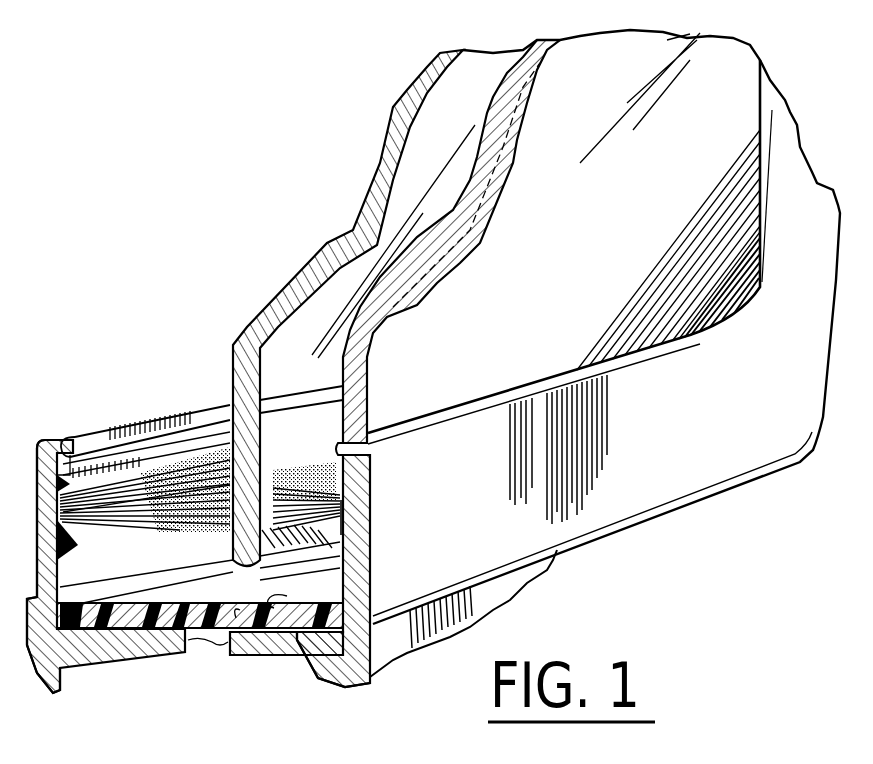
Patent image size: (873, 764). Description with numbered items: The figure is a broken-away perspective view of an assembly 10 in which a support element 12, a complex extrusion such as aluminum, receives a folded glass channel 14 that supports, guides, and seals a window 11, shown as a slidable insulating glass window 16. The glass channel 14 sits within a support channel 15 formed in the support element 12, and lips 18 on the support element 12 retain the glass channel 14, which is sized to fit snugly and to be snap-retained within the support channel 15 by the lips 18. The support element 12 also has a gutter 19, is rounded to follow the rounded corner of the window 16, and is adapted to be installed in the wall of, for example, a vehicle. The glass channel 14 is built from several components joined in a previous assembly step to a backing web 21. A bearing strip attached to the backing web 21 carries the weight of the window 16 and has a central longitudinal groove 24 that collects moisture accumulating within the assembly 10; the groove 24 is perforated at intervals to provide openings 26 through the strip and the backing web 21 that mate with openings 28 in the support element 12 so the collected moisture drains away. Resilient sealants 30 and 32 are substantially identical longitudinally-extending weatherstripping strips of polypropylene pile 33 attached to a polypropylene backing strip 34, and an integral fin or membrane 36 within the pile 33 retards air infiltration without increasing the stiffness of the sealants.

The assembly 10 is at (126, 360).
The window 11 is at (563, 242).
The support element 12 is at (215, 596).
The glass channel 14 is at (196, 564).
The support channel 15 is at (140, 655).
The slidable insulating glass window 16 is at (317, 260).
The lips 18 is at (84, 440).
The gutter 19 is at (300, 657).
The backing web 21 is at (40, 582).
The central longitudinal groove 24 is at (222, 595).
The openings 26 is at (275, 610).
The openings 28 is at (228, 640).
The resilient sealant 30 is at (72, 548).
The resilient sealant 32 is at (369, 515).
The polypropylene pile 33 is at (168, 475).
The polypropylene backing strip 34 is at (342, 527).
The integral fin or membrane 36 is at (113, 525).